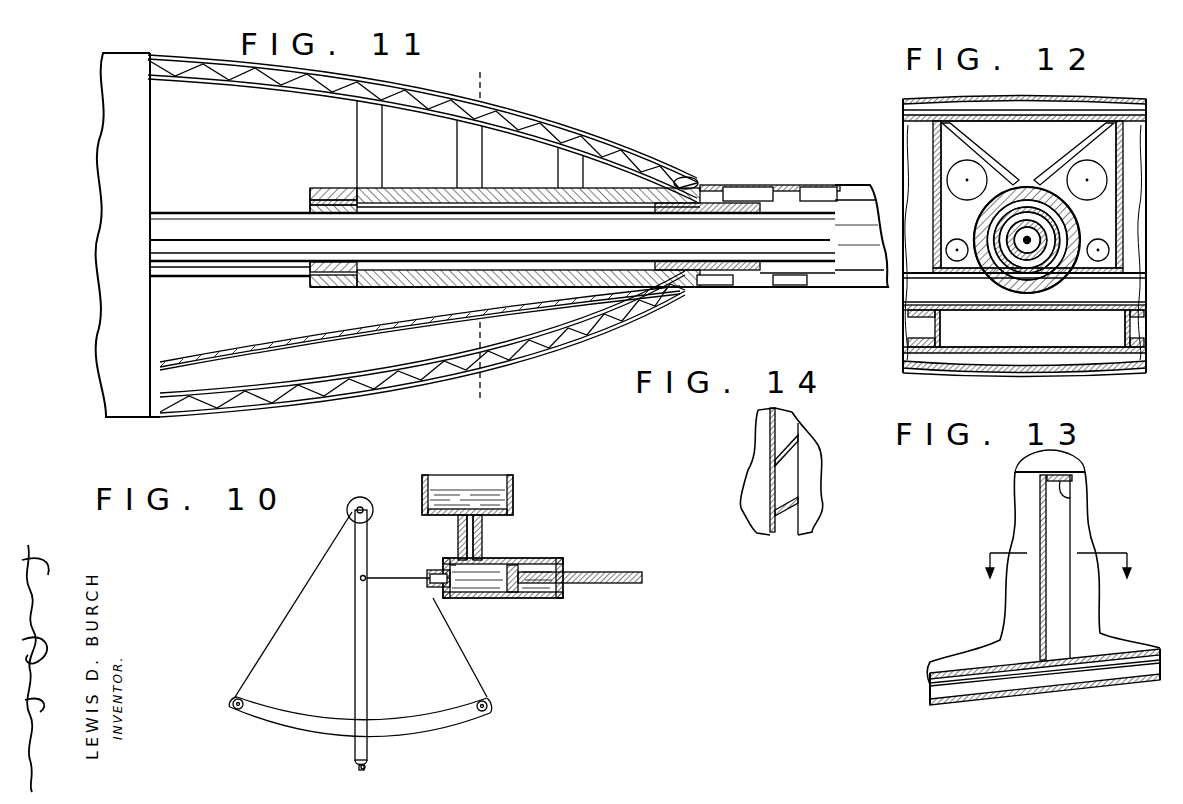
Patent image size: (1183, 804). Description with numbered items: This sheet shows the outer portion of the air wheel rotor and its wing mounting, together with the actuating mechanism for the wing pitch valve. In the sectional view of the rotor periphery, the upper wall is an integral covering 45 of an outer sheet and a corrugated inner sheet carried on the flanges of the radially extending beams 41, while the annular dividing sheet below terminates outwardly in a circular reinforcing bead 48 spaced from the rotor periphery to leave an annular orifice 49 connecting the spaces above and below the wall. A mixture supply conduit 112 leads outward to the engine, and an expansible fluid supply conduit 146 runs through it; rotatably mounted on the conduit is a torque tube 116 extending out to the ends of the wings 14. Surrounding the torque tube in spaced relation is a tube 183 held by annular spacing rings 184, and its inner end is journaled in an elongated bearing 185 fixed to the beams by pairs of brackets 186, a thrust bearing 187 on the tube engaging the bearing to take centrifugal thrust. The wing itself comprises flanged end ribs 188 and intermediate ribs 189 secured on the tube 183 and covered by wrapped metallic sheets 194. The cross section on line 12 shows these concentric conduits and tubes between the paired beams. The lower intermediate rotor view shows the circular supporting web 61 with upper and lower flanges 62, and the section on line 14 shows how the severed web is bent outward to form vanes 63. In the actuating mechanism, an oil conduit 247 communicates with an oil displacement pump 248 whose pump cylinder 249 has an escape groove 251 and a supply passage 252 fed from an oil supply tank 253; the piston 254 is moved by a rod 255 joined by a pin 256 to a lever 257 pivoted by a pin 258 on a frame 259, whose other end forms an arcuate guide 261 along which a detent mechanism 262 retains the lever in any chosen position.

In FIG. 11, the section line 12— 12 is at (478, 70).
In FIG. 11, the wings 14 is at (862, 302).
In FIG. 13, the wings 14 is at (1046, 578).
In FIG. 12, the radially extending beams 41 is at (905, 140).
In FIG. 11, the covering 45 is at (512, 104).
In FIG. 11, the circular reinforcing bead 48 is at (308, 284).
In FIG. 11, the annular orifice 49 is at (416, 292).
In FIG. 13, the circular supporting ring or web 61 is at (1048, 604).
In FIG. 14, the circular supporting ring or web 61 is at (770, 477).
In FIG. 13, the flanges 62 is at (1062, 500).
In FIG. 14, the flanges 62 is at (787, 427).
In FIG. 14, the vanes 63 is at (798, 517).
In FIG. 12, the mixture supply conduit 112 is at (1008, 233).
In FIG. 11, the torque tube 116 is at (688, 223).
In FIG. 12, the torque tube 116 is at (1052, 238).
In FIG. 12, the expansible fluid supply conduit 146 is at (1027, 237).
In FIG. 11, the tubes 183 is at (450, 272).
In FIG. 12, the tubes 183 is at (1033, 284).
In FIG. 11, the annular spacing rings 184 is at (310, 200).
In FIG. 12, the annular spacing rings 184 is at (1007, 256).
In FIG. 11, the elongated bearings 185 is at (442, 188).
In FIG. 11, the brackets 186 is at (373, 146).
In FIG. 12, the brackets 186 is at (1077, 150).
In FIG. 11, the thrust bearings 187 is at (340, 188).
In FIG. 11, the end ribs 188 is at (715, 288).
In FIG. 11, the intermediate ribs 189 is at (820, 287).
In FIG. 11, the metallic sheets 194 is at (822, 186).
In FIG. 10, the conduit 247 is at (603, 570).
In FIG. 10, the oil displacement pump 248 is at (546, 612).
In FIG. 10, the pump cylinder 249 is at (473, 600).
In FIG. 10, the escape groove 251 is at (453, 567).
In FIG. 10, the supply passage 252 is at (480, 540).
In FIG. 10, the oil supply tank 253 is at (513, 493).
In FIG. 10, the piston 254 is at (512, 592).
In FIG. 10, the rod 255 is at (413, 553).
In FIG. 10, the pin 256 is at (363, 582).
In FIG. 10, the lever 257 is at (370, 757).
In FIG. 10, the pin 258 is at (360, 506).
In FIG. 10, the frame 259 is at (318, 583).
In FIG. 10, the arcuate guide 261 is at (297, 730).
In FIG. 10, the detent mechanism 262 is at (365, 767).